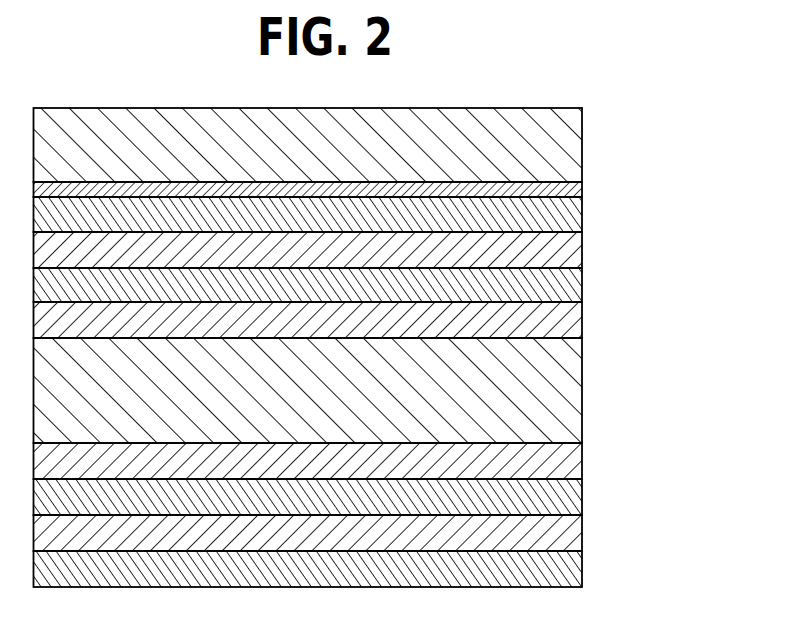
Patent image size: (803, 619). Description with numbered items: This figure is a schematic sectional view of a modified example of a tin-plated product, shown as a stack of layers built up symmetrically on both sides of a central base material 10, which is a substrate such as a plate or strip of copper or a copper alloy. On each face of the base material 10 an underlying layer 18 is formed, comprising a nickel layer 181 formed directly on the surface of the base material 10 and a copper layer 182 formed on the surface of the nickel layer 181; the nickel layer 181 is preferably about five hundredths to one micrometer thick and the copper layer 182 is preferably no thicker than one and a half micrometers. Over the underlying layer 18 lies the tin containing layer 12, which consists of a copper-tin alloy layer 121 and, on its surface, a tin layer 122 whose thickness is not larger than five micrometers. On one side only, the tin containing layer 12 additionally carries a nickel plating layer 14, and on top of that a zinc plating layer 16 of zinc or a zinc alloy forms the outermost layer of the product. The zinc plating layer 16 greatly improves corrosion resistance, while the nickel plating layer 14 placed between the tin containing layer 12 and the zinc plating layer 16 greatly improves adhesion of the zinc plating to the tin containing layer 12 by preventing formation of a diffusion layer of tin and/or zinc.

The base material 10 is at (582, 383).
The tin containing layer 12 is at (385, 390).
The copper-tin alloy layer 121 is at (582, 250).
The tin layer 122 is at (582, 210).
The nickel plating layer 14 is at (582, 186).
The zinc plating layer 16 is at (582, 122).
The underlying layer 18 is at (385, 391).
The nickel layer 181 is at (582, 322).
The copper layer 182 is at (582, 285).